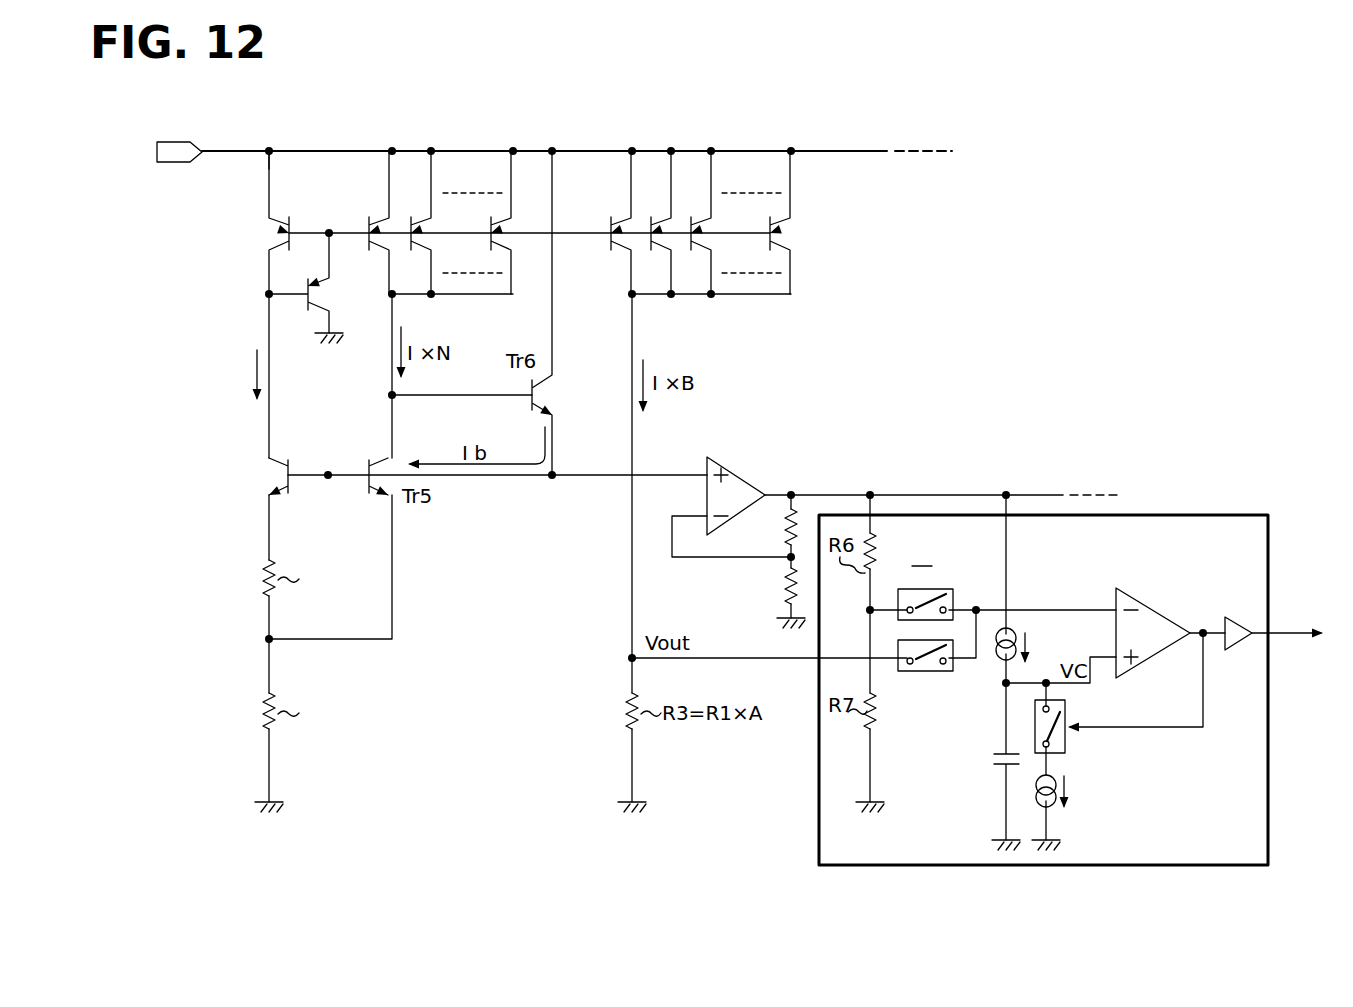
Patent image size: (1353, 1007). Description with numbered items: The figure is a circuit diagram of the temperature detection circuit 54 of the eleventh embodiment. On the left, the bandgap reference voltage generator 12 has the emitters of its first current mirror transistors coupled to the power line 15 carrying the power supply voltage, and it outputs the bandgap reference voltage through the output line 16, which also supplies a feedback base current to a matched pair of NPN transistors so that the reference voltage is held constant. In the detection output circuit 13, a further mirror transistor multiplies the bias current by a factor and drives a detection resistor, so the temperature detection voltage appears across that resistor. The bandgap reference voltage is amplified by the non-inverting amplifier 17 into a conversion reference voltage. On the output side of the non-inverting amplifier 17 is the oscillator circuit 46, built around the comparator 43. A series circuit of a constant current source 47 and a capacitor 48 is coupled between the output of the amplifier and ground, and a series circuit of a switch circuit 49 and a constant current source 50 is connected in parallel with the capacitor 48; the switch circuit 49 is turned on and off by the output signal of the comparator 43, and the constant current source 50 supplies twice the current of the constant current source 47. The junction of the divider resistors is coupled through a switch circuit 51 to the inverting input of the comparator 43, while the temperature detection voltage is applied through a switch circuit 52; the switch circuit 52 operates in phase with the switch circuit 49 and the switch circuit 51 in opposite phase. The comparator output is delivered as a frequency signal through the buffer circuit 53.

The bandgap reference voltage generator 12 is at (276, 130).
The detection output circuit 13 is at (641, 130).
The power line 15 is at (323, 151).
The output line 16 is at (497, 477).
The non-inverting amplifier 17 is at (744, 477).
The comparator 43 is at (1149, 609).
The oscillator circuit 46 is at (1270, 748).
The constant current source 47 is at (994, 660).
The capacitor 48 is at (988, 770).
The switch circuit 49 is at (1068, 714).
The constant current source 50 is at (1064, 775).
The switch circuit 51 is at (945, 588).
The switch circuit 52 is at (926, 672).
The buffer circuit 53 is at (1231, 623).
The temperature detection circuit 54 is at (959, 406).